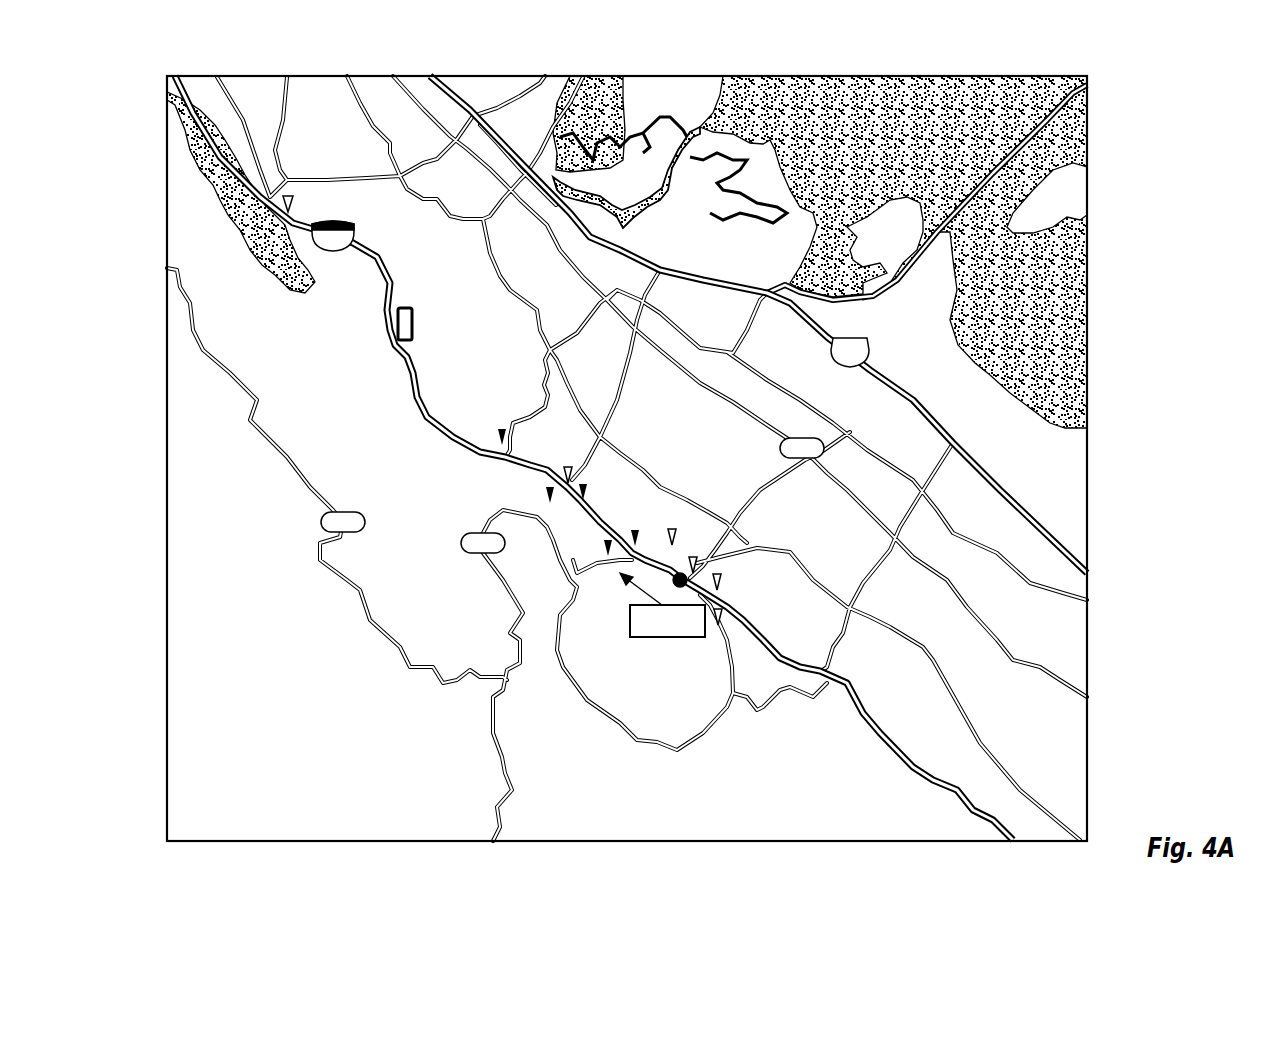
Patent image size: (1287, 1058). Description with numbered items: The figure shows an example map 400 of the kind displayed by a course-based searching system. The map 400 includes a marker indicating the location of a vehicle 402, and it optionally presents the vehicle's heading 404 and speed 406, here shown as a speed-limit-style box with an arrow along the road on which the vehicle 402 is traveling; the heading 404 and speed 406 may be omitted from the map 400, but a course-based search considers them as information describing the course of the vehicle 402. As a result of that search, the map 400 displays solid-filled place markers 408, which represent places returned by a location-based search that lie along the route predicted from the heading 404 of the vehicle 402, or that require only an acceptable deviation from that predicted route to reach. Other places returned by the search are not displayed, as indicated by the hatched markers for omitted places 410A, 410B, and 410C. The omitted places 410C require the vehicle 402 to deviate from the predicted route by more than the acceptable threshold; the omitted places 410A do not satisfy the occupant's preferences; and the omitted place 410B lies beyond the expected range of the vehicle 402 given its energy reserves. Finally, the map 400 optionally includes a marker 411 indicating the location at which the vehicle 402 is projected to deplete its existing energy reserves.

The map 400 is at (1124, 99).
The vehicle 402 is at (680, 580).
The heading 404 is at (625, 578).
The speed 406 is at (630, 638).
The place markers 408 is at (543, 495).
The omitted places 410A is at (572, 472).
The omitted place 410B is at (283, 200).
The omitted places 410C is at (677, 536).
The marker 411 is at (393, 317).